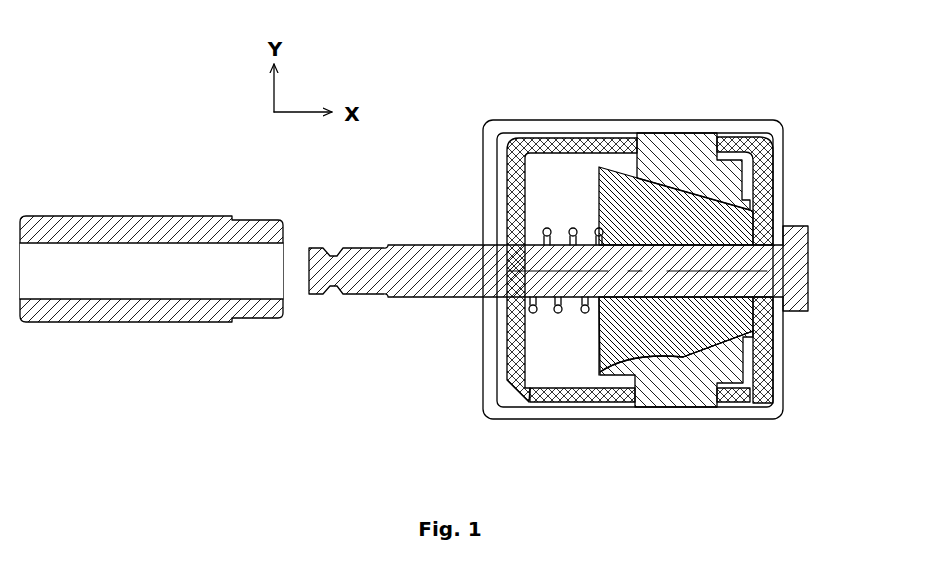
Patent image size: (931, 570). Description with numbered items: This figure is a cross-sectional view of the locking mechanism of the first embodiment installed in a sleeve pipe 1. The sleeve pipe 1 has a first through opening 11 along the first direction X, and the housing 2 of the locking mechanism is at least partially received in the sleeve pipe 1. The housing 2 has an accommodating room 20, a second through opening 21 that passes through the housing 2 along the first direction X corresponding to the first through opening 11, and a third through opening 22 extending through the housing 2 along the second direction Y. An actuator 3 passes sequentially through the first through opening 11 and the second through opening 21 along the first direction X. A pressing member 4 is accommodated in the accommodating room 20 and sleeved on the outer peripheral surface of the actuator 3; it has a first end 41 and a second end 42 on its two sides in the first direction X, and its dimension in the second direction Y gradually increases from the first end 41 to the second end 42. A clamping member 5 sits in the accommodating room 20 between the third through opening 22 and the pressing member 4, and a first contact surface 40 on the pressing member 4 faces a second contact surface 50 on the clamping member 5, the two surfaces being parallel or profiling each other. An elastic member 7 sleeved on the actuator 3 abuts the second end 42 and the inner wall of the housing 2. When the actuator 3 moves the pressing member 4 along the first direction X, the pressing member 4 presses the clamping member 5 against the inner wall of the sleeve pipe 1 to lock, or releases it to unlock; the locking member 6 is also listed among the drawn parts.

The sleeve pipe 1 is at (748, 125).
The housing 2 is at (530, 394).
The accommodating room 20 is at (558, 170).
The second through opening 21 is at (772, 323).
The third through opening 22 is at (717, 143).
The actuator 3 is at (800, 289).
The first through opening 11 is at (778, 244).
The pressing member 4 is at (622, 190).
The first contact surface 40 is at (592, 388).
The first end 41 is at (755, 400).
The second end 42 is at (598, 328).
The clamping member 5 is at (676, 150).
The second contact surface 50 is at (683, 357).
The locking member 6 is at (138, 230).
The elastic member 7 is at (543, 230).